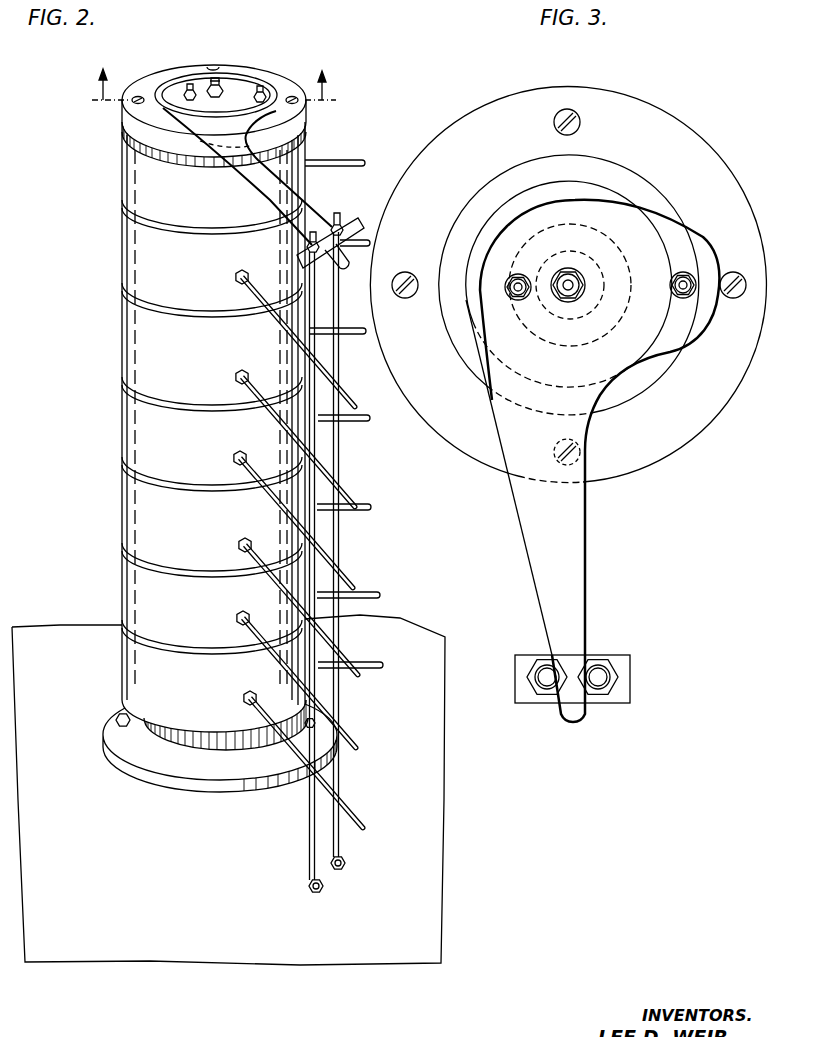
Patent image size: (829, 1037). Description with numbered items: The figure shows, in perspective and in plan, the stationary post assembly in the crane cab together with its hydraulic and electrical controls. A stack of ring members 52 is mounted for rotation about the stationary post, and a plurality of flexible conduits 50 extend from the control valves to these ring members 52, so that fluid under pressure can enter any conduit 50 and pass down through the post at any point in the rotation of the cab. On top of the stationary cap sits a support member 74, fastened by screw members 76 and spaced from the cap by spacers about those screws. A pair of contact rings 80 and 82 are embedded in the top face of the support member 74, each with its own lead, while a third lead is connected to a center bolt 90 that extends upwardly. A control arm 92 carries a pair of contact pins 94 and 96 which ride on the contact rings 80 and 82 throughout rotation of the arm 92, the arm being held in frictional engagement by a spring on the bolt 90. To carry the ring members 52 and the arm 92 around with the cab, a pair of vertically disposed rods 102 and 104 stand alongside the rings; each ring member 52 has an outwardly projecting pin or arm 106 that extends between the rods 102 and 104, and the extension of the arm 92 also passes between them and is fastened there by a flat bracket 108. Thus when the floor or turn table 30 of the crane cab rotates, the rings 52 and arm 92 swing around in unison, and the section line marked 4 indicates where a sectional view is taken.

In FIG. 2, the turn table 30 is at (427, 858).
In FIG. 2, the flexible conduits 50 is at (351, 161).
In FIG. 2, the ring members 52 is at (126, 171).
In FIG. 2, the support member 74 is at (172, 69).
In FIG. 3, the support member 74 is at (465, 118).
In FIG. 2, the screw members 76 is at (135, 102).
In FIG. 3, the screw members 76 is at (580, 123).
In FIG. 3, the contact ring 80 is at (460, 352).
In FIG. 3, the contact ring 82 is at (610, 329).
In FIG. 2, the center bolt 90 is at (222, 88).
In FIG. 3, the center bolt 90 is at (572, 284).
In FIG. 2, the control arm 92 is at (286, 187).
In FIG. 3, the control arm 92 is at (577, 598).
In FIG. 2, the contact pin 94 is at (262, 92).
In FIG. 3, the contact pin 94 is at (690, 283).
In FIG. 2, the contact pin 96 is at (190, 89).
In FIG. 3, the contact pin 96 is at (517, 288).
In FIG. 2, the upright rod 102 is at (309, 848).
In FIG. 3, the upright rod 102 is at (540, 677).
In FIG. 2, the upright rod 104 is at (341, 848).
In FIG. 3, the upright rod 104 is at (600, 677).
In FIG. 2, the outwardly projecting pin or arm 106 is at (357, 584).
In FIG. 2, the flat bracket 108 is at (346, 225).
In FIG. 3, the flat bracket 108 is at (617, 704).
In FIG. 2, the section line 4- 4 is at (214, 73).